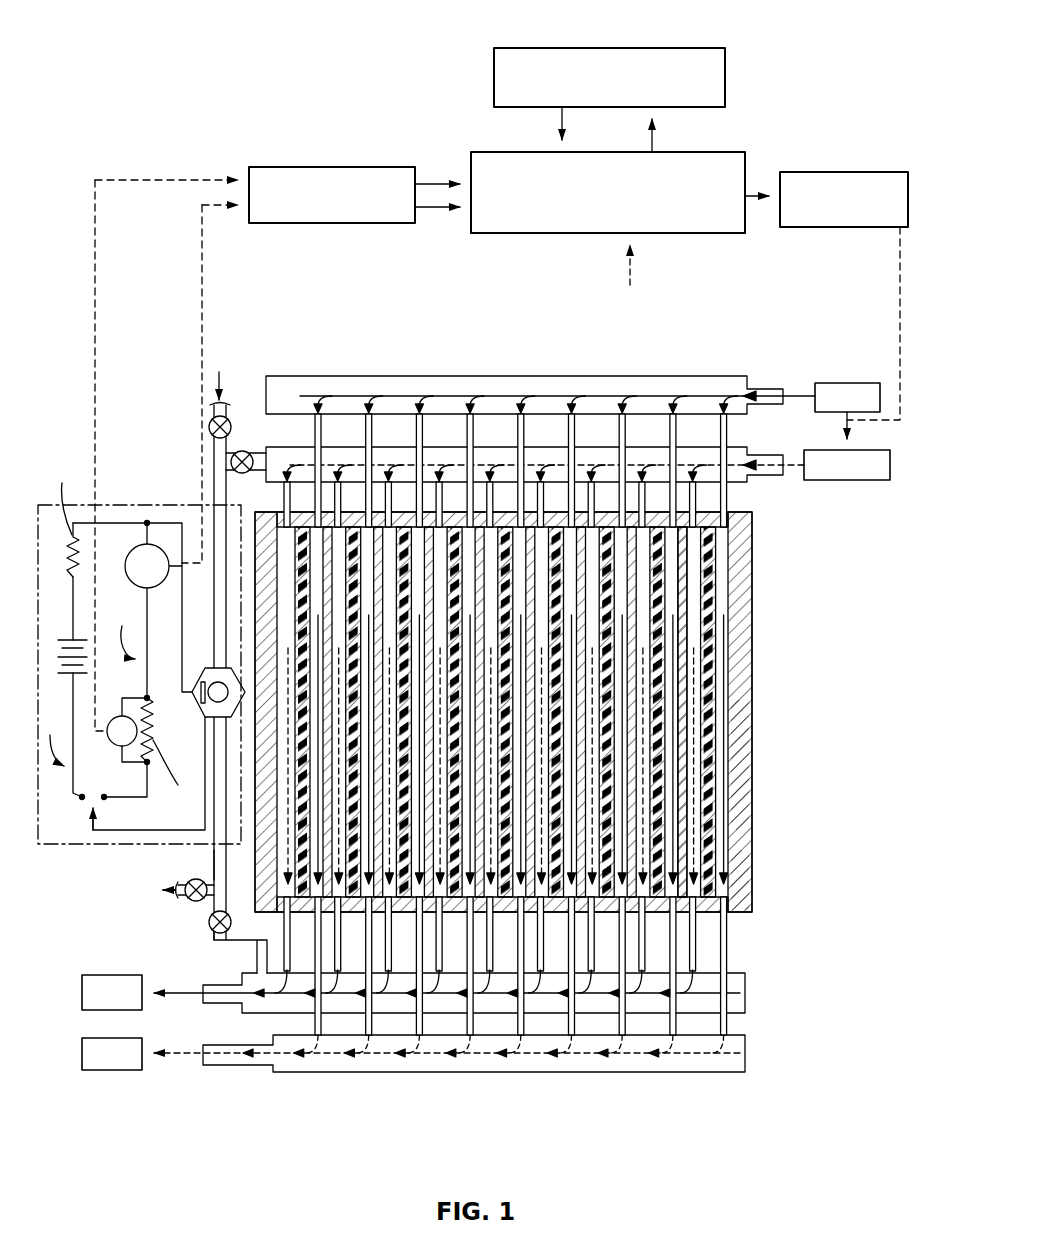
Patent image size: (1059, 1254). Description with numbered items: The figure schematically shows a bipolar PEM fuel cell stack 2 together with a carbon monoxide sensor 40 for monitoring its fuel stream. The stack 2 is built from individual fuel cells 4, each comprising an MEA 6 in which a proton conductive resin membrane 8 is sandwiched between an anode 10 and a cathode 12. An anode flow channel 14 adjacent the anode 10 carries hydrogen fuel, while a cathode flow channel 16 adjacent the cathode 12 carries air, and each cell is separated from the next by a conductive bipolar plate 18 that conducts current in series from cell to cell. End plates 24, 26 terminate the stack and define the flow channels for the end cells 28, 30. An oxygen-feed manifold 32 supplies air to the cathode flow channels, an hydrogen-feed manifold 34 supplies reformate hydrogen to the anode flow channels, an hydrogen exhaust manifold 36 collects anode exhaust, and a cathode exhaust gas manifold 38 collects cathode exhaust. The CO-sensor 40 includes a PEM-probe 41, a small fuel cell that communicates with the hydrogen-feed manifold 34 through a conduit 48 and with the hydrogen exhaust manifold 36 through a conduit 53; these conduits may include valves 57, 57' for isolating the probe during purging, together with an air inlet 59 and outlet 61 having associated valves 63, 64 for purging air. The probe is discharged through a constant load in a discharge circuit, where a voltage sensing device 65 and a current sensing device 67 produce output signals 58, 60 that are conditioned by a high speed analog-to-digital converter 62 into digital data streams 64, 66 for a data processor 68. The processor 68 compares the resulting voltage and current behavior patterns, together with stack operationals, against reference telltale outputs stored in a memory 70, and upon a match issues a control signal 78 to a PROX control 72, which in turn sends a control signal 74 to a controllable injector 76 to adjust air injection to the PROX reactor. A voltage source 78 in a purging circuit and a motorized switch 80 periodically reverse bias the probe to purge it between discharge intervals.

The stack 2 is at (762, 557).
The fuel cells 4 is at (556, 494).
The MEA 6 is at (725, 604).
The proton conductive resin membrane 8 is at (710, 632).
The anode 10 is at (695, 655).
The cathode 12 is at (720, 701).
The anode flow channel 14 is at (692, 790).
The cathode flow channel 16 is at (733, 873).
The bipolar plate 18 is at (571, 913).
The end plate 24 is at (741, 765).
The end plate 26 is at (231, 925).
The end cell 28 is at (742, 584).
The end cell 30 is at (268, 532).
The oxygen-feed manifold 32 is at (735, 376).
The hydrogen-feed manifold 34 is at (740, 447).
The hydrogen exhaust manifold 36 is at (248, 982).
The cathode exhaust gas manifold 38 is at (284, 1070).
The CO-sensor 40 is at (102, 850).
The PEM-probe 41 is at (200, 707).
The conduit 48 is at (212, 633).
The conduit 53 is at (214, 863).
The valve 57 is at (260, 444).
The valve 57' is at (189, 955).
The signal 58 is at (98, 322).
The air inlet 59 is at (224, 370).
The signal 60 is at (204, 266).
The outlet 61 is at (173, 884).
The analog-to-digital converter 62 is at (374, 167).
The valve 63 is at (227, 416).
The valve / data stream 64 is at (437, 240).
The voltage sensing device 65 is at (125, 715).
The data stream 66 is at (438, 240).
The current sensing device 67 is at (155, 551).
The data processor 68 is at (712, 153).
The memory 70 is at (718, 49).
The PROX control 72 is at (885, 172).
The control signal 74 is at (900, 310).
The controllable injector 76 is at (850, 426).
The voltage source / control signal 78 is at (760, 193).
The motorized switch 80 is at (91, 824).